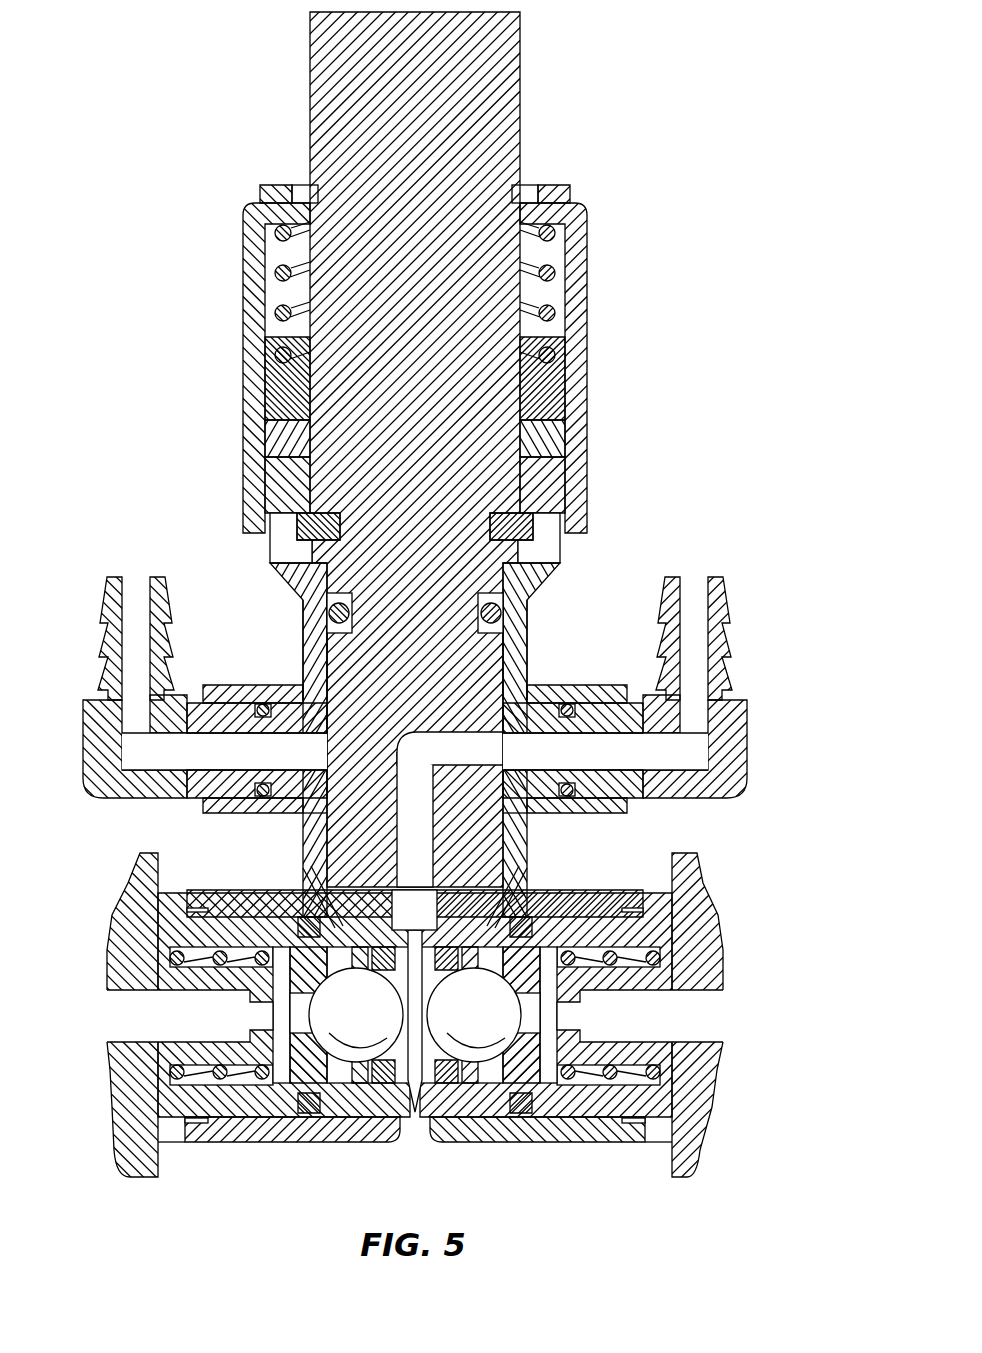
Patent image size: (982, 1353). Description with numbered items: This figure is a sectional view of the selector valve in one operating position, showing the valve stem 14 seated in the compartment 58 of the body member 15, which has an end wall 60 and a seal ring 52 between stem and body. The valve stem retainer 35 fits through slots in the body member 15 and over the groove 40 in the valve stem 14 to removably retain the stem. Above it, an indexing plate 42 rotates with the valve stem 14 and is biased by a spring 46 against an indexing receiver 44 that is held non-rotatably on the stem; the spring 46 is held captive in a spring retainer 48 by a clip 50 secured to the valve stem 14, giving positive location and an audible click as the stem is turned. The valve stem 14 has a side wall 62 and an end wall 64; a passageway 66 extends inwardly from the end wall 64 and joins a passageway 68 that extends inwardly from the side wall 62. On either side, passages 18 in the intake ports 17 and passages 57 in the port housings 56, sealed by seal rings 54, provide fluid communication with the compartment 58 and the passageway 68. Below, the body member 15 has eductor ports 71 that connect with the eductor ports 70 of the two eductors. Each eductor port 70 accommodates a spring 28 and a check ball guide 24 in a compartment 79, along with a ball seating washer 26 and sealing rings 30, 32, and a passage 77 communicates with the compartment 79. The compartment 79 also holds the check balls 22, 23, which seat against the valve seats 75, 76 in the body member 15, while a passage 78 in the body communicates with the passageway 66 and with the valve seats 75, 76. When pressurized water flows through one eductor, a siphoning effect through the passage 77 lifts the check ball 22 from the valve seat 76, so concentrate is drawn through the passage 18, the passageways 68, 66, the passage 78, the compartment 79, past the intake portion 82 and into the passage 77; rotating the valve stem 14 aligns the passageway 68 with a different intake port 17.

The valve stem 14 is at (521, 85).
The body member 15 is at (280, 580).
The intake port 17 is at (108, 600).
The passage 18 is at (145, 750).
The check ball 22 is at (512, 1110).
The check ball 23 is at (325, 1085).
The check ball guide 24 is at (272, 1118).
The ball seating washer 26 is at (367, 1120).
The spring 28 is at (236, 1130).
The sealing ring 30 is at (292, 890).
The sealing ring 32 is at (415, 1120).
The valve stem retainer 35 is at (562, 533).
The groove 40 is at (560, 555).
The indexing plate 42 is at (560, 395).
The indexing receiver 44 is at (565, 437).
The spring 46 is at (555, 275).
The spring retainer 48 is at (588, 318).
The clip 50 is at (262, 190).
The seal ring 52 is at (500, 612).
The seal ring 54 is at (265, 703).
The port housing 56 is at (222, 688).
The passage 57 is at (240, 748).
The compartment 58 is at (533, 817).
The end wall 60 is at (497, 867).
The side wall 62 is at (522, 652).
The end wall 64 is at (335, 872).
The passageway 66 is at (405, 843).
The passageway 68 is at (460, 757).
The eductor port 70 is at (130, 945).
The eductor port 71 is at (200, 1142).
The valve seat 75 is at (399, 993).
The valve seat 76 is at (434, 1036).
The passage 77 is at (120, 1018).
The passage 78 is at (403, 924).
The compartment 79 is at (180, 1075).
The intake portion 82 is at (265, 1030).